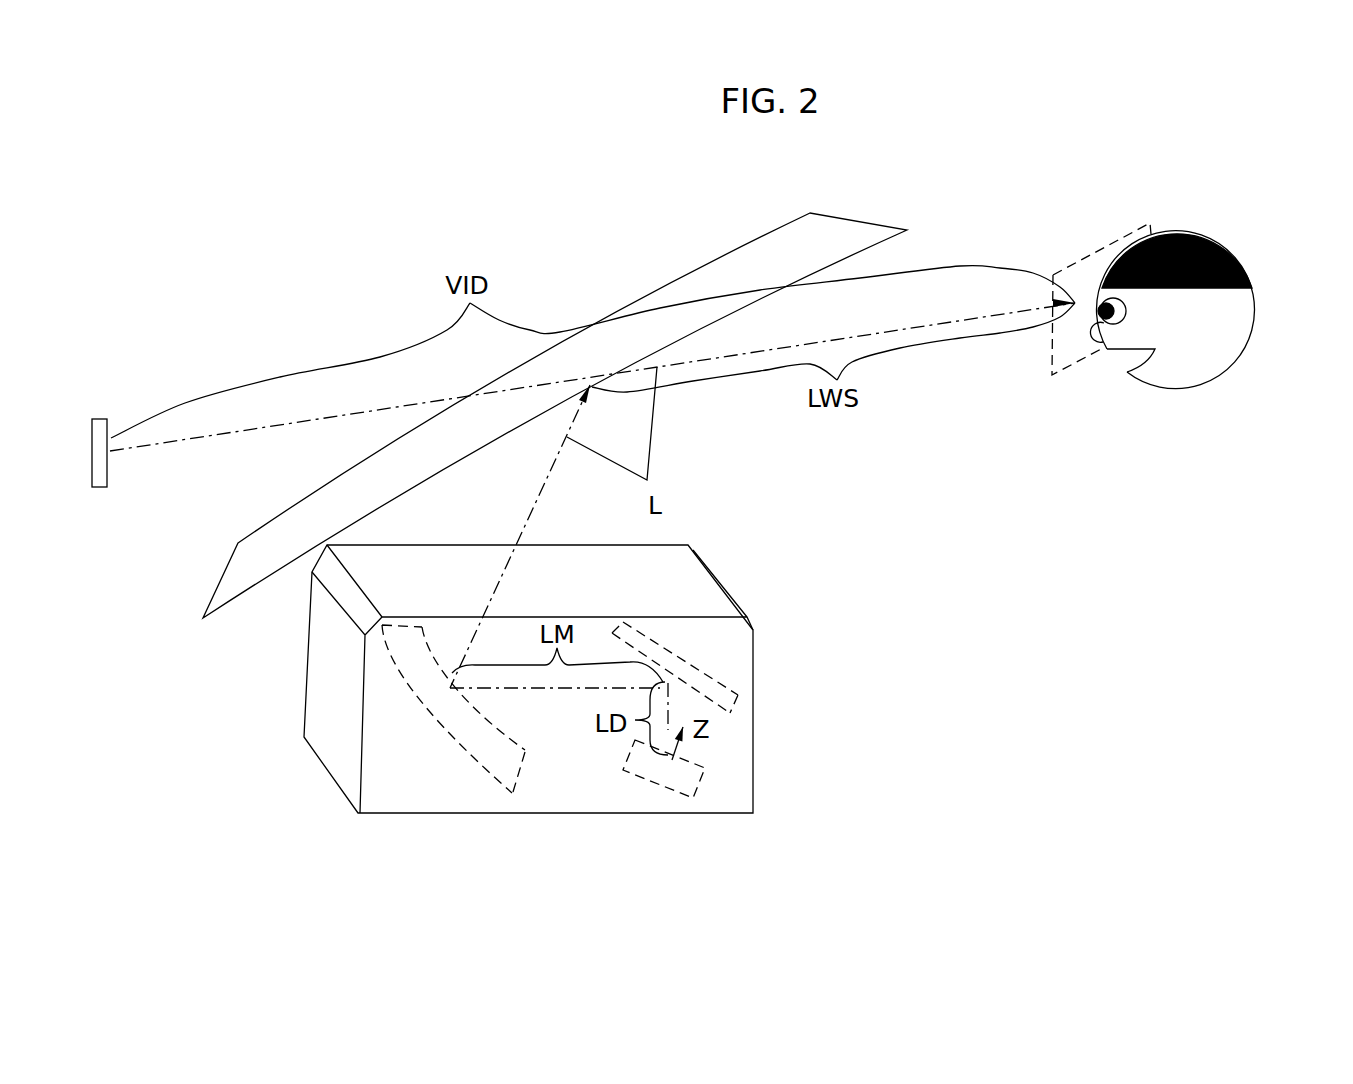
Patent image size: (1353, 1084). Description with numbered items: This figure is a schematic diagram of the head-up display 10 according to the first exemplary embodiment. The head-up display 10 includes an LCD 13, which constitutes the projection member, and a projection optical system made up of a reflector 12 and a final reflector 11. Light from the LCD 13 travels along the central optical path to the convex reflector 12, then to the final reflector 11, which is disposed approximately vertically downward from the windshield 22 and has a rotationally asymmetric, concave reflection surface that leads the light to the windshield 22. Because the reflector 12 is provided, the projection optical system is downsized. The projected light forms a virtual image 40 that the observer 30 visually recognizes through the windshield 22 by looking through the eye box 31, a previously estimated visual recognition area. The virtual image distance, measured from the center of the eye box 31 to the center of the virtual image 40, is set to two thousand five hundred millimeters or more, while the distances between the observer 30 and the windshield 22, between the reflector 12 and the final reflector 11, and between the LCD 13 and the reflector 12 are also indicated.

The head-up display 10 is at (270, 750).
The final reflector 11 is at (458, 743).
The reflector 12 is at (718, 682).
The LCD 13 is at (652, 782).
The windshield 22 is at (733, 260).
The observer 30 is at (1238, 258).
The eye box 31 is at (1115, 240).
The virtual image 40 is at (105, 487).